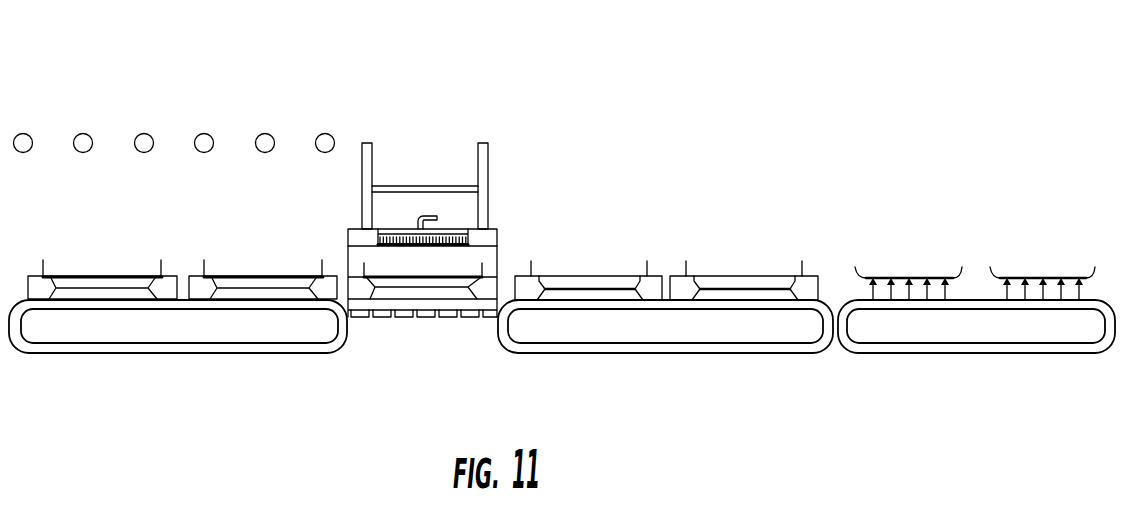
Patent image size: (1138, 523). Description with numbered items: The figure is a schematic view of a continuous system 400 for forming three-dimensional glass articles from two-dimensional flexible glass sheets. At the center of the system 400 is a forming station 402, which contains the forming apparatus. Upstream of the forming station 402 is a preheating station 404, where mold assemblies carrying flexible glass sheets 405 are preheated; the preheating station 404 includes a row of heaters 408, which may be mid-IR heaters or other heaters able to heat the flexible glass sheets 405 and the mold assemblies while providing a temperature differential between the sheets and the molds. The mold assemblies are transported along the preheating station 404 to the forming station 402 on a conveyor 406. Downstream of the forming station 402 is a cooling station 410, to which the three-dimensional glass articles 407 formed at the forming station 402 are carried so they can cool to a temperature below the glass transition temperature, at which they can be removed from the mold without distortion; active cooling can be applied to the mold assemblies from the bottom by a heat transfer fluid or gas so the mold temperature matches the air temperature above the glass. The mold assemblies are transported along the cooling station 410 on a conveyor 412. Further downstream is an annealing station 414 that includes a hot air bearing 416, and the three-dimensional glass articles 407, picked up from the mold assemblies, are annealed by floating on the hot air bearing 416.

The continuous system 400 is at (467, 97).
The forming station 402 is at (416, 151).
The preheating station 404 is at (173, 129).
The flexible glass sheet 405 is at (100, 275).
The conveyor 406 is at (193, 353).
The three-dimensional glass article 407 is at (583, 287).
The heater 408 is at (83, 136).
The cooling station 410 is at (665, 200).
The conveyor 412 is at (690, 353).
The annealing station 414 is at (972, 243).
The hot air bearing 416 is at (987, 353).